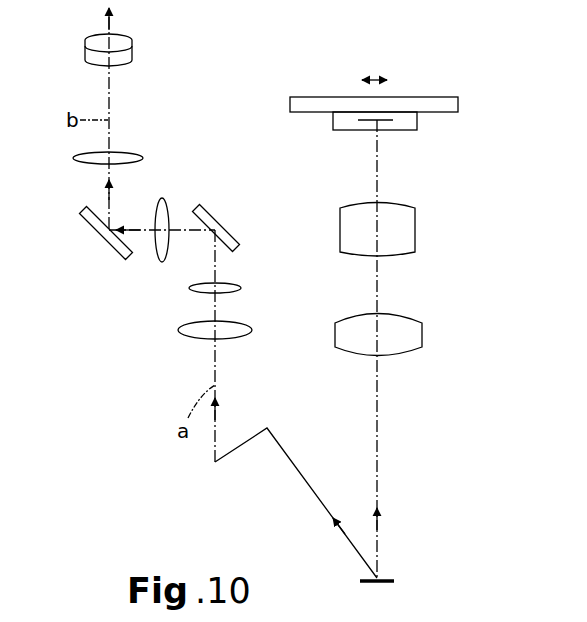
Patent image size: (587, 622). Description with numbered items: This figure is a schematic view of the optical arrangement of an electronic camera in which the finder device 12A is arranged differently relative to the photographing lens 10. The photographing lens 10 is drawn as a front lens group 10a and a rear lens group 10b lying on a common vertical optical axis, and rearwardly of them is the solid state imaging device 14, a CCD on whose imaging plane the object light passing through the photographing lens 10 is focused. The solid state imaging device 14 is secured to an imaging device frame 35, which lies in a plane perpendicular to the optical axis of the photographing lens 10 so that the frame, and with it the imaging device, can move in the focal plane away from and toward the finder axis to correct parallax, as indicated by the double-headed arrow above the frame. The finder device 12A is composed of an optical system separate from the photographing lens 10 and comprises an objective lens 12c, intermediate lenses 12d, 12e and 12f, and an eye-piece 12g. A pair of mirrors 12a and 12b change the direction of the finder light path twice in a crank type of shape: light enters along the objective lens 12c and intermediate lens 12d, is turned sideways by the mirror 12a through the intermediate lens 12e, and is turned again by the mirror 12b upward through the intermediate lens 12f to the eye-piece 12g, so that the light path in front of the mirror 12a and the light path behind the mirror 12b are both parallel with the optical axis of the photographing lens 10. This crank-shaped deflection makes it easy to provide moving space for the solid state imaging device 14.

The photographing lens 10 is at (498, 258).
The front lens group 10a is at (422, 335).
The rear lens group 10b is at (415, 248).
The finder device 12A is at (218, 148).
The mirror 12a is at (227, 232).
The mirror 12b is at (112, 253).
The objective lens 12c is at (252, 330).
The intermediate lens 12d is at (241, 288).
The intermediate lens 12e is at (162, 262).
The intermediate lens 12f is at (143, 155).
The eye-piece 12g is at (132, 50).
The solid state imaging device 14 is at (413, 122).
The imaging device frame 35 is at (452, 104).